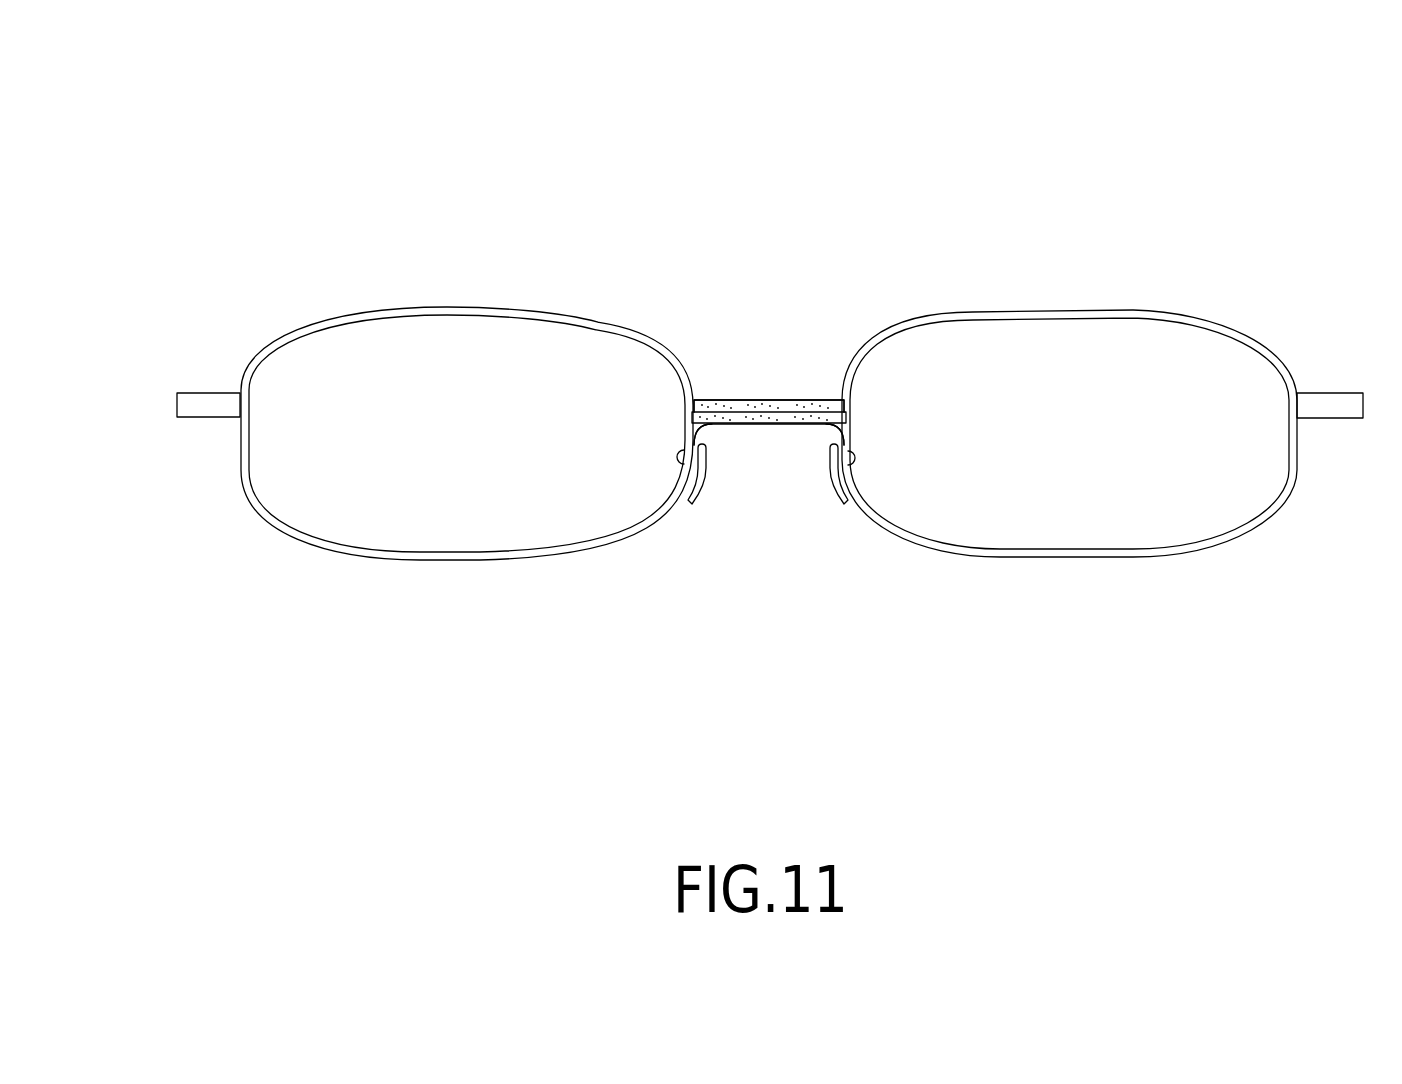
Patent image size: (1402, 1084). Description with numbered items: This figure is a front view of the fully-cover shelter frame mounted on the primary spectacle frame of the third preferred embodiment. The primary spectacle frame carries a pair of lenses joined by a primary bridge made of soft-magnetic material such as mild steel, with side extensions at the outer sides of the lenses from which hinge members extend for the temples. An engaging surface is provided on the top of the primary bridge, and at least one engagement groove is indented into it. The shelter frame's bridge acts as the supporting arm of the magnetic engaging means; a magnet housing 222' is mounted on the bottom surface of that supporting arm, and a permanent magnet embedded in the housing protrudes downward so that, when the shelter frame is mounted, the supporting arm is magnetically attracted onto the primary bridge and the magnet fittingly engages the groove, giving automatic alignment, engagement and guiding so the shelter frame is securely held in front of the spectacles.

The bridge lower connecting plate 222' is at (769, 336).